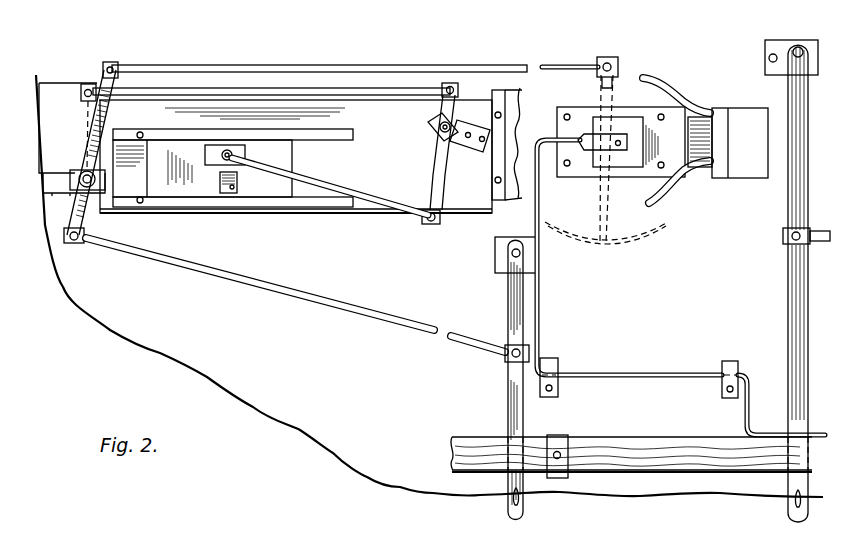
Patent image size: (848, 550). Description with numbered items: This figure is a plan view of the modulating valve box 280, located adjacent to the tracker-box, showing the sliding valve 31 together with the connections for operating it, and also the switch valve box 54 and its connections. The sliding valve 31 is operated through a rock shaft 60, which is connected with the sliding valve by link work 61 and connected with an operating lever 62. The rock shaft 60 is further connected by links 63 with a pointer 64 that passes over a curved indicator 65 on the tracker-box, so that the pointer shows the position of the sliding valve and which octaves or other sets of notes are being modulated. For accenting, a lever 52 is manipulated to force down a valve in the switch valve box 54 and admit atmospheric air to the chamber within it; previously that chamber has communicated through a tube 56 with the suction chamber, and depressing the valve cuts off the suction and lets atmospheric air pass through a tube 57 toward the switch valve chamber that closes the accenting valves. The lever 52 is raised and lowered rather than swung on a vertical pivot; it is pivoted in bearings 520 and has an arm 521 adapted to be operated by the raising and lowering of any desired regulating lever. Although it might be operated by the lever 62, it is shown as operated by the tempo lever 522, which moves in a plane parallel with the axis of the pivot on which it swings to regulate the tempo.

The sliding valve 31 is at (200, 185).
The link work 61 is at (367, 90).
The modulating valve box 280 is at (377, 217).
The rock shaft 60 is at (90, 185).
The operating lever 62 is at (512, 410).
The lever 52 is at (545, 188).
The arm 521 is at (745, 432).
The bearings 520 is at (555, 360).
The links 63 is at (580, 76).
The pointer 64 is at (604, 245).
The curved indicator 65 is at (644, 236).
The tube 57 is at (665, 82).
The tube 56 is at (668, 182).
The switch valve box 54 is at (760, 180).
The tempo lever 522 is at (790, 308).